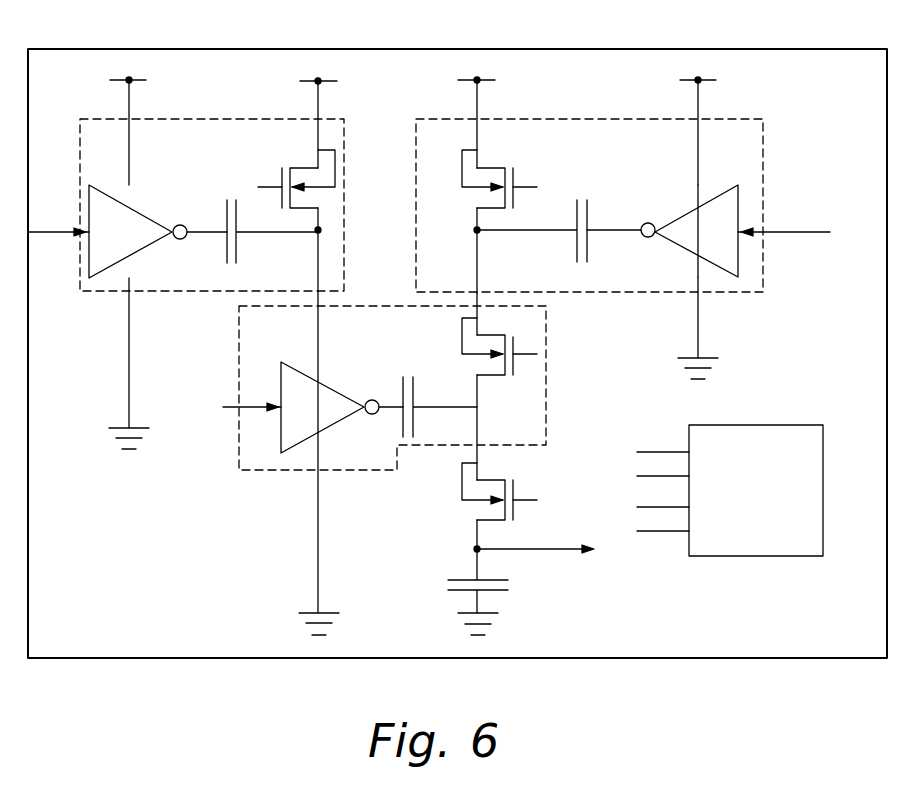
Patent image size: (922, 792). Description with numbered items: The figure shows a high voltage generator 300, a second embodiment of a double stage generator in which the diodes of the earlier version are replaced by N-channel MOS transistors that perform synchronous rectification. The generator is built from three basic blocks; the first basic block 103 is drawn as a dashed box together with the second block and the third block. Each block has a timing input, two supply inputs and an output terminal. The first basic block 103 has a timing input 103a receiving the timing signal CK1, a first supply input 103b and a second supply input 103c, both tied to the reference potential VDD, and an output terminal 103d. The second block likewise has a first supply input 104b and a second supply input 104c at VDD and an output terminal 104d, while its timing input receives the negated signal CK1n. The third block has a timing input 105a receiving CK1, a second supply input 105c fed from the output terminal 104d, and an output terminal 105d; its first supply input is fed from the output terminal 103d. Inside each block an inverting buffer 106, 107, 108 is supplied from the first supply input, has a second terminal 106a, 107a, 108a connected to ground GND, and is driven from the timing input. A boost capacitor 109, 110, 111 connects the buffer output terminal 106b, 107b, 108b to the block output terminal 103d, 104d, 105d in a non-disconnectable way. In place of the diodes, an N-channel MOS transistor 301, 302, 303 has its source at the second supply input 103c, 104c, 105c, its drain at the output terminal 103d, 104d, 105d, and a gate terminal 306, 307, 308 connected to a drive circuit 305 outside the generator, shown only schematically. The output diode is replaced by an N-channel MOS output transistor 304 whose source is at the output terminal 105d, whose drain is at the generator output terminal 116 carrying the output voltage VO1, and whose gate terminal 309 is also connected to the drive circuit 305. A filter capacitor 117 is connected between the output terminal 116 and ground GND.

The high voltage generator 300 is at (688, 62).
The first basic block 103 is at (191, 130).
The timing input 103a is at (50, 233).
The first supply input 103b is at (129, 131).
The second supply input 103c is at (318, 125).
The output terminal 103d is at (318, 250).
The first supply input 104b is at (698, 125).
The second supply input 104c is at (476, 125).
The output terminal 104d is at (476, 277).
The timing input 105a is at (233, 407).
The second supply input 105c is at (477, 298).
The output terminal 105d is at (477, 427).
The inverting buffer 106 is at (136, 225).
The second terminal 106a is at (129, 325).
The output terminal 106b is at (186, 240).
The inverting buffer 107 is at (728, 210).
The second terminal 107a is at (698, 320).
The output terminal 107b is at (625, 230).
The inverting buffer 108 is at (298, 432).
The second terminal 108a is at (317, 550).
The output terminal 108b is at (374, 416).
The boost capacitor 109 is at (246, 262).
The boost capacitor 110 is at (585, 210).
The boost capacitor 111 is at (403, 390).
The output terminal 116 is at (532, 552).
The filter capacitor 117 is at (450, 590).
The N-channel MOS transistor 301 is at (270, 210).
The N-channel MOS transistor 302 is at (470, 197).
The N-channel MOS transistor 303 is at (462, 363).
The N-channel MOS output transistor 304 is at (464, 513).
The drive circuit 305 is at (790, 540).
The gate terminal 306 is at (270, 187).
The gate terminal 307 is at (520, 187).
The gate terminal 308 is at (523, 355).
The gate terminal 309 is at (525, 500).